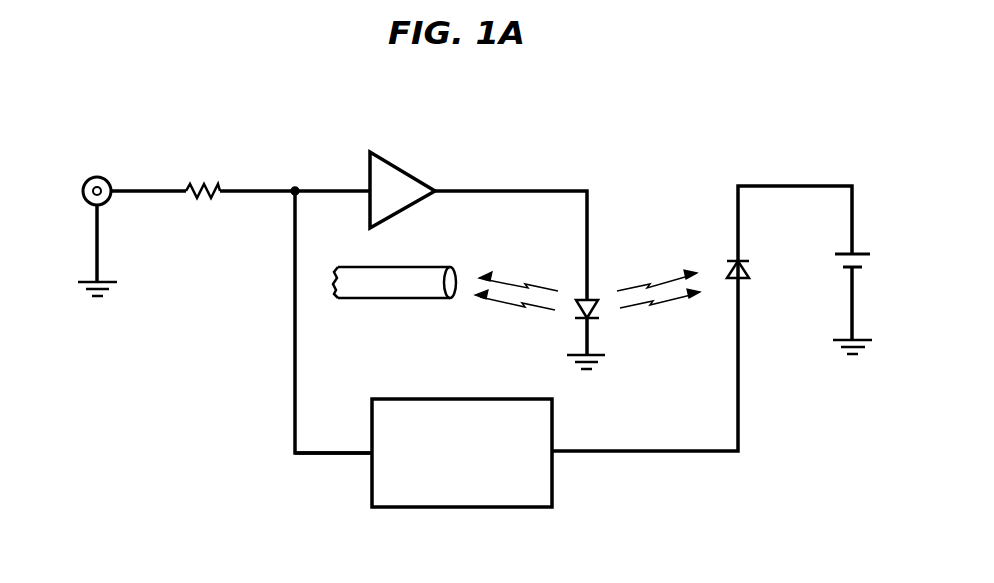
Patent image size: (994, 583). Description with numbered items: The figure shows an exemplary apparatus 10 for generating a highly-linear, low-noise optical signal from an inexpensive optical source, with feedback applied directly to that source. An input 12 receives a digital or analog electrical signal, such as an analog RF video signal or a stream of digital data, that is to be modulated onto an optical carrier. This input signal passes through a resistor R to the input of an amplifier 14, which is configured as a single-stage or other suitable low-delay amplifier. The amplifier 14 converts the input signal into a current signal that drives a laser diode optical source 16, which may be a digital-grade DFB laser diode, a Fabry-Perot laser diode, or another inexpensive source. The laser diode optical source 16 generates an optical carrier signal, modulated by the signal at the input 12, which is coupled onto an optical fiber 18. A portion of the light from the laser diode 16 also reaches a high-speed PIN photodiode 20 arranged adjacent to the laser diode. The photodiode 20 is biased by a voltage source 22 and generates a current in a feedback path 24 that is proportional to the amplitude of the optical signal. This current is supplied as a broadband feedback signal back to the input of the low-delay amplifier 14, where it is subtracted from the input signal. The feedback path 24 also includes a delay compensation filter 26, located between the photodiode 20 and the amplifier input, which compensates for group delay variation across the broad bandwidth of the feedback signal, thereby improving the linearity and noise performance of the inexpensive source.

The apparatus 10 is at (92, 78).
The input 12 is at (85, 185).
The amplifier 14 is at (400, 165).
The laser diode optical source 16 is at (590, 297).
The optical fiber 18 is at (425, 268).
The photodiode 20 is at (750, 270).
The voltage source 22 is at (858, 252).
The feedback path 24 is at (262, 447).
The delay compensation filter 26 is at (553, 478).